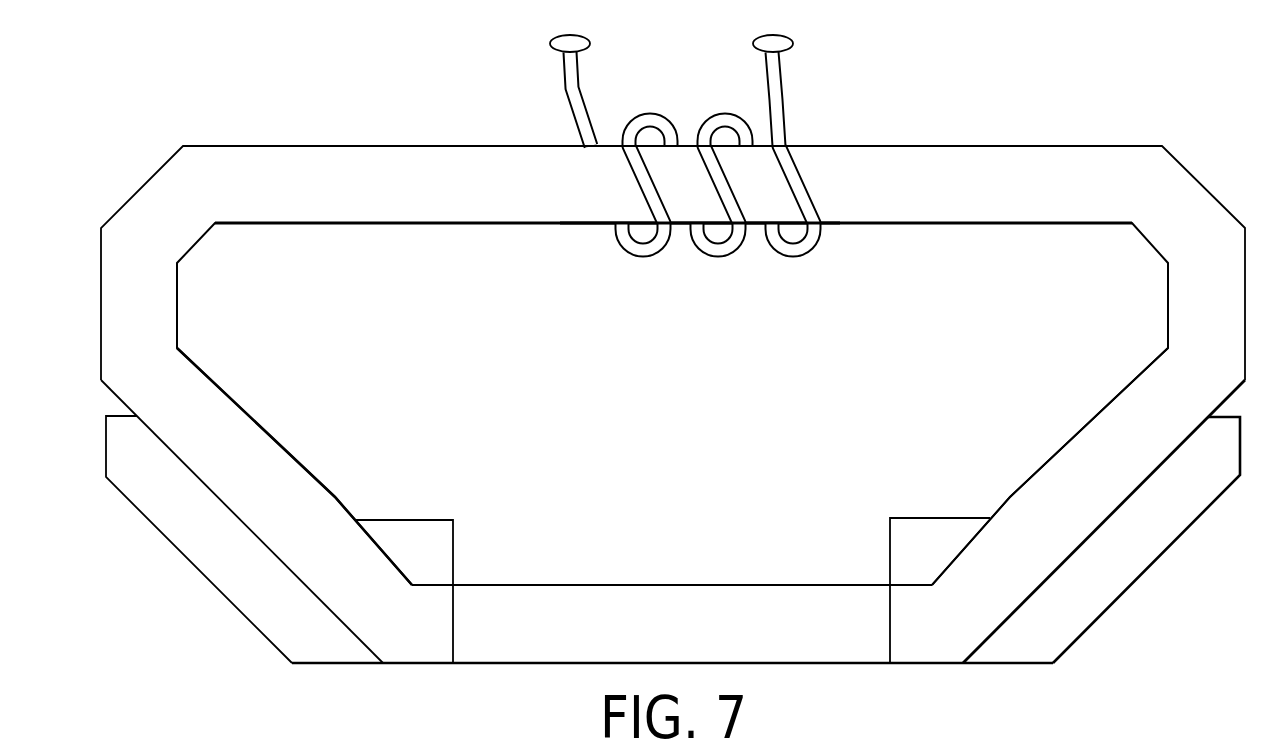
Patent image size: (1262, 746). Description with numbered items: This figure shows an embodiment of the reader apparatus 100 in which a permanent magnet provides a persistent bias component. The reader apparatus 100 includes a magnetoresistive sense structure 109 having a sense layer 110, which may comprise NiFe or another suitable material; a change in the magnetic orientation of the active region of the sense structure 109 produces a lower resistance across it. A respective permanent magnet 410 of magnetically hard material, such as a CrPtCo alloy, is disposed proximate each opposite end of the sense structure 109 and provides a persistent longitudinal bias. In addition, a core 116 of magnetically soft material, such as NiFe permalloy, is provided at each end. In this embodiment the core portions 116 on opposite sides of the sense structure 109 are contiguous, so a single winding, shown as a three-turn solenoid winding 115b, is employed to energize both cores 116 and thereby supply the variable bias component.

The reader apparatus 100 is at (161, 590).
The magnetoresistive sense structure 109 is at (720, 580).
The sense layer 110 is at (698, 636).
The solenoid winding 115b is at (788, 86).
The core 116 is at (272, 445).
The permanent magnet 410 is at (418, 528).